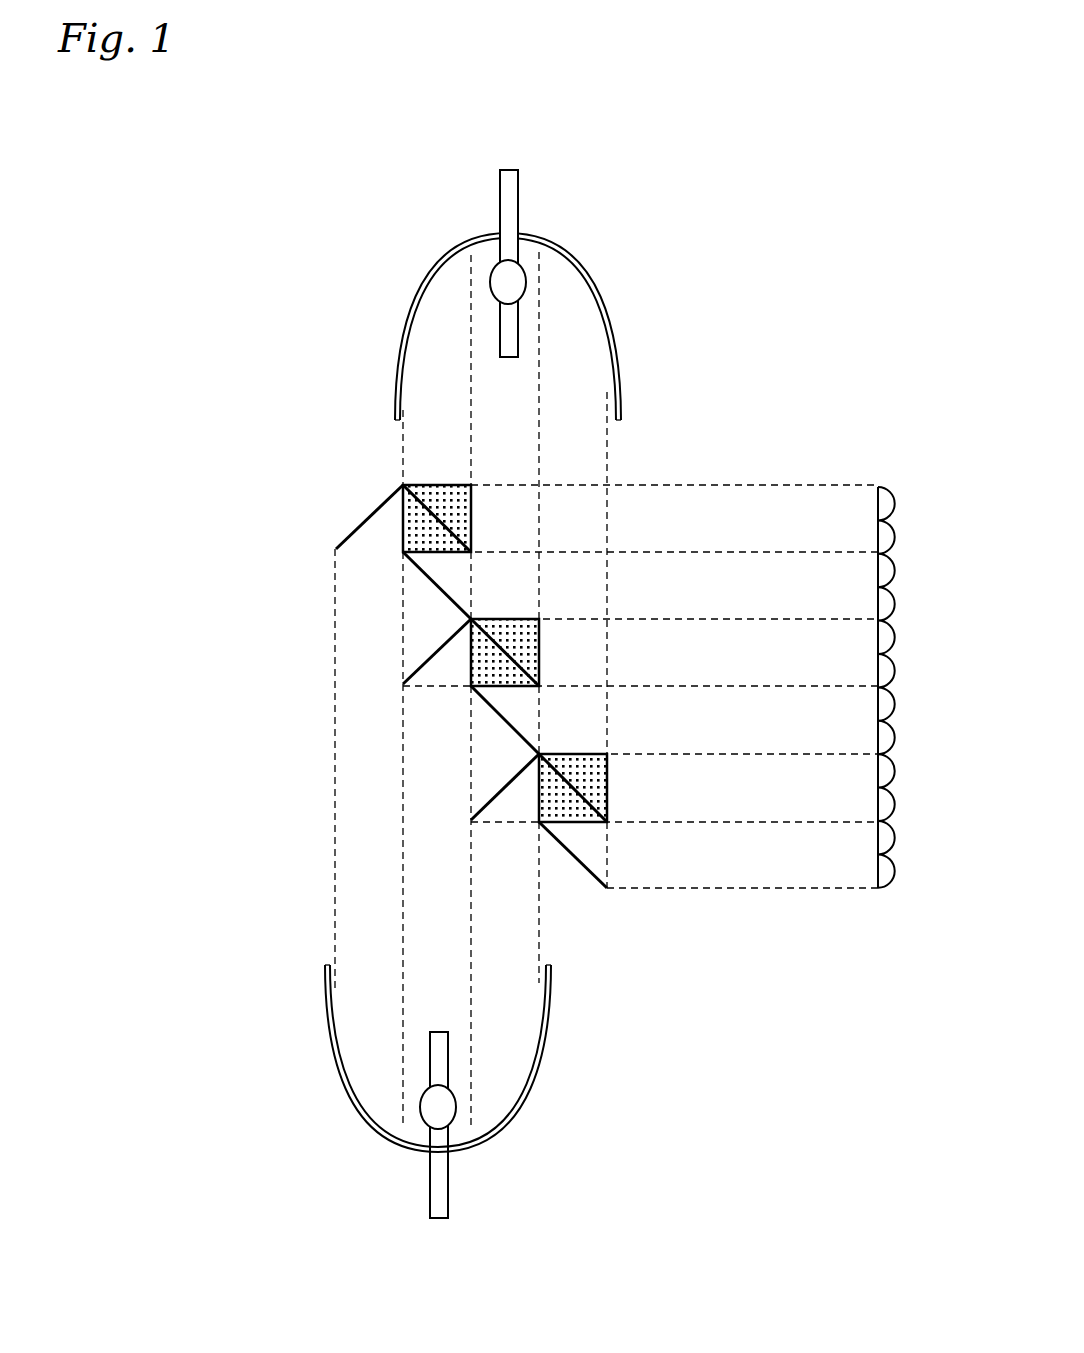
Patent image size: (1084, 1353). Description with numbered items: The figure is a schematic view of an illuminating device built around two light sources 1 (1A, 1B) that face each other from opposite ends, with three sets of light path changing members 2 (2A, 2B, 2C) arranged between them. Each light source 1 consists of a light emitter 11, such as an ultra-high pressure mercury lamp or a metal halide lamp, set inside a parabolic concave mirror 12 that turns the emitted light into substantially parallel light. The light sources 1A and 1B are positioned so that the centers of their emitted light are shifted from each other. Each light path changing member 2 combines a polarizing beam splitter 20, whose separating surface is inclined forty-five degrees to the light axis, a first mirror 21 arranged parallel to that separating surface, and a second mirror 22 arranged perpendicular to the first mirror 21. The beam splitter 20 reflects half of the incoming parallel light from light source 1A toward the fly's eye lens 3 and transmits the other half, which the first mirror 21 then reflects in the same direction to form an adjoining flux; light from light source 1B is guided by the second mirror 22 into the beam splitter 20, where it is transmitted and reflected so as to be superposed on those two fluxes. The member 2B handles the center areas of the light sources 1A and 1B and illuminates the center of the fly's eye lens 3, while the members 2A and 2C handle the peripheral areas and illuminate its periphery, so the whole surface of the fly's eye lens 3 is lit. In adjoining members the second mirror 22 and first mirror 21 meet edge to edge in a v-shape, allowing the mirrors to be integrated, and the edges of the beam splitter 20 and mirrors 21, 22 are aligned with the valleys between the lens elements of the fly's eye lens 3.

The light source 1 is at (447, 696).
The light source 1A is at (437, 177).
The light source 1B is at (412, 1114).
The light emitter 11 is at (502, 280).
The parabolic concave mirror 12 is at (447, 696).
The light path changing member 2 is at (359, 686).
The light path changing member 2A is at (180, 765).
The light path changing member 2B is at (180, 632).
The light path changing member 2C is at (180, 495).
The polarizing beam splitter 20 is at (402, 545).
The first mirror 21 is at (427, 578).
The second mirror 22 is at (365, 516).
The fly's eye lens 3 is at (897, 584).